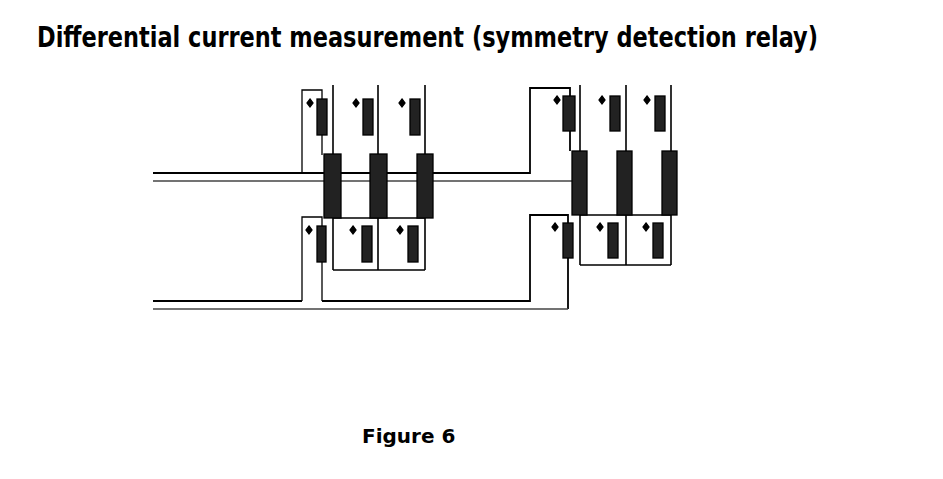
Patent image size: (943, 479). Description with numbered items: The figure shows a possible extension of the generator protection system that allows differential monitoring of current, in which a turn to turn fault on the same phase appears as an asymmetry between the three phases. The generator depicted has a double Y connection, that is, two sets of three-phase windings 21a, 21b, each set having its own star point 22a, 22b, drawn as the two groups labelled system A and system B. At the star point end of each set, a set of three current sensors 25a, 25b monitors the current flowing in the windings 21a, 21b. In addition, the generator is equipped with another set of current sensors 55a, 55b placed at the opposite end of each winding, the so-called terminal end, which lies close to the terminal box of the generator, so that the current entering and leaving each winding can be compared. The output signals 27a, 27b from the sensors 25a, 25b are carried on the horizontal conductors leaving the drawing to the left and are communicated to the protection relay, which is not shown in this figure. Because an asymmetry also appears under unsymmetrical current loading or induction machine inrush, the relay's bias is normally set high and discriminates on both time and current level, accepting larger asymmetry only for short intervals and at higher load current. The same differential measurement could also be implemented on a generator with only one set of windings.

The output signal 27b is at (242, 172).
The output signal 27a is at (242, 301).
The star point 22a is at (397, 270).
The set of windings 21a is at (433, 172).
The current sensors 55a is at (420, 110).
The current sensors 25a is at (418, 240).
The star point 22b is at (626, 265).
The set of windings 21b is at (677, 172).
The current sensors 55b is at (665, 112).
The current sensors 25b is at (663, 240).